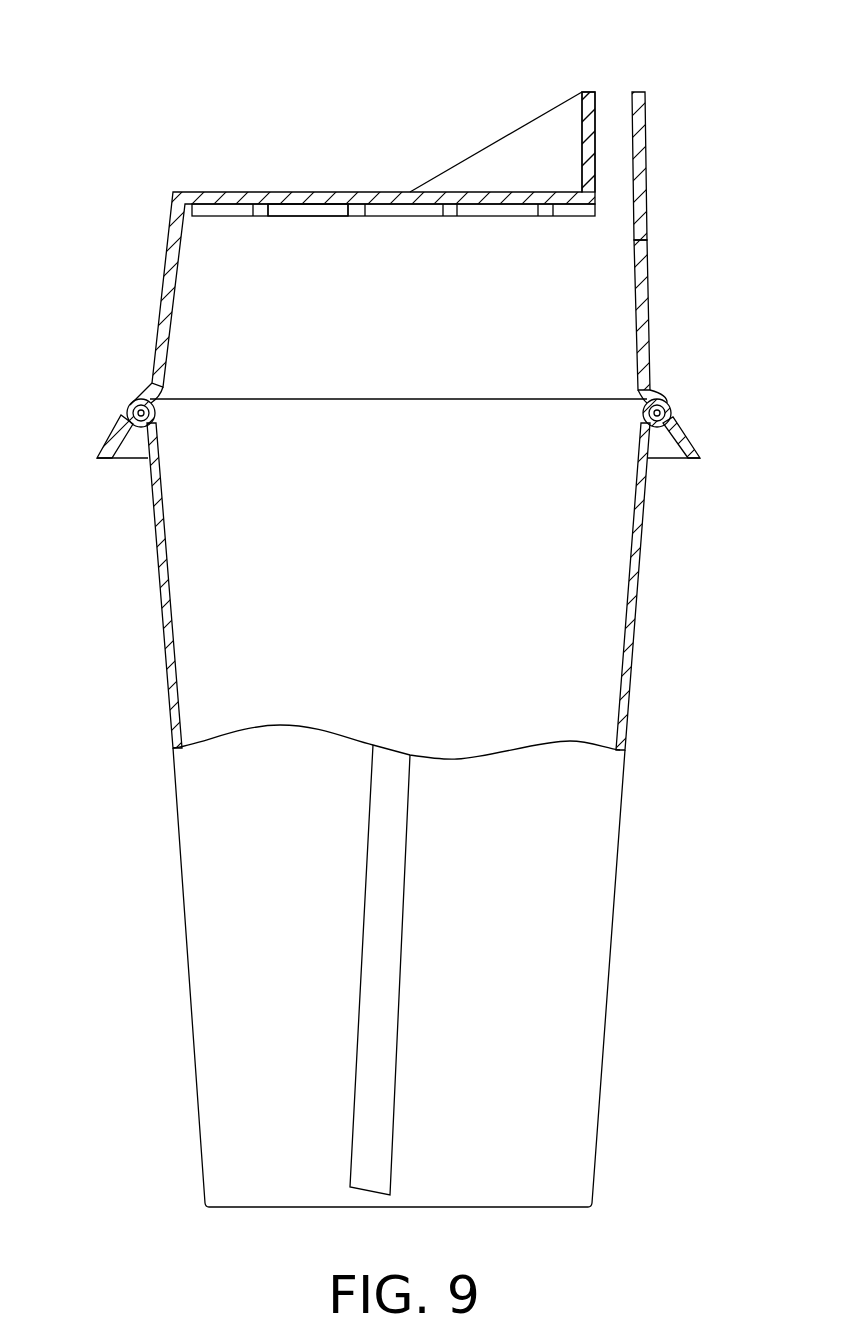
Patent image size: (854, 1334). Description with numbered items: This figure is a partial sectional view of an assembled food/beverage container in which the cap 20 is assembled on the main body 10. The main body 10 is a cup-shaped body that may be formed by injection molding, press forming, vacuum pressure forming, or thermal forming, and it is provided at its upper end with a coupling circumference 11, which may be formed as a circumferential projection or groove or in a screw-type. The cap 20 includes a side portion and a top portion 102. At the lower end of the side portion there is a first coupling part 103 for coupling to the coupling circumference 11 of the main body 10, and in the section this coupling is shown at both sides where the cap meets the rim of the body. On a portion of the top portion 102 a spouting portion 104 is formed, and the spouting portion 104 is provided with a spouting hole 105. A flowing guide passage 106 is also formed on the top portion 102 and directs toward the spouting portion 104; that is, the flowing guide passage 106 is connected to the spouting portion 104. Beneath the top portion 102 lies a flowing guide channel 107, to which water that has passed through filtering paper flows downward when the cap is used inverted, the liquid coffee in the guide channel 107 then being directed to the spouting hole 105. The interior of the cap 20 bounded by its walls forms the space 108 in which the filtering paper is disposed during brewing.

The cup-shaped body 10 is at (162, 954).
The coupling circumference 11 is at (143, 425).
The cap 20 is at (158, 192).
The top portion 102 is at (263, 207).
The first coupling part 103 is at (120, 415).
The spouting portion 104 is at (650, 158).
The spouting hole 105 is at (608, 115).
The flowing guide passage 106 is at (300, 191).
The flowing guide channel 107 is at (333, 207).
The space 108 is at (617, 316).